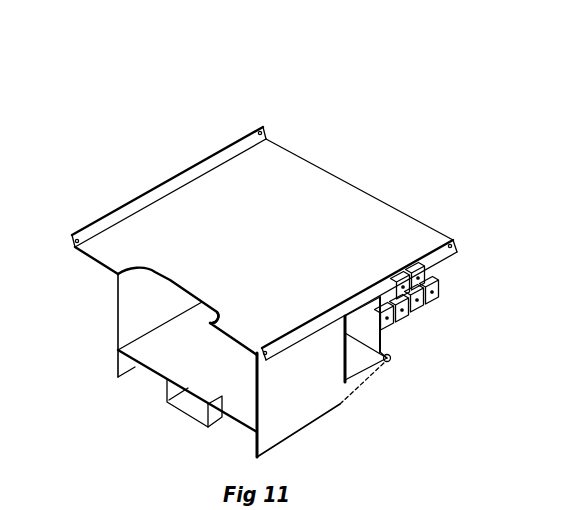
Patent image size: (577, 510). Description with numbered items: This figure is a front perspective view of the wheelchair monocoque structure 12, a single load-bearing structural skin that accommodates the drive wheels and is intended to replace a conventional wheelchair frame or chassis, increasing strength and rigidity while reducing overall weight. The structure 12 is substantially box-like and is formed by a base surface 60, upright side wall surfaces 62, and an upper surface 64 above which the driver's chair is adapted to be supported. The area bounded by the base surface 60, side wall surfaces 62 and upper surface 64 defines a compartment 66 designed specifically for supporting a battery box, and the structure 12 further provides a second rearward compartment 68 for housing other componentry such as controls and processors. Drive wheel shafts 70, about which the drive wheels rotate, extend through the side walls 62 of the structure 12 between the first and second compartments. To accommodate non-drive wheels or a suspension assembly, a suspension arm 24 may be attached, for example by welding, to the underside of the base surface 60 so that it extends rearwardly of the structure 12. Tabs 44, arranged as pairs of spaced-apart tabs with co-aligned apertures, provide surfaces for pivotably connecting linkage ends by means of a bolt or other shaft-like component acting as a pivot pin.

The monocoque structure 12 is at (298, 268).
The suspension arm 24 is at (350, 381).
The tabs 44 is at (453, 283).
The base surface 60 is at (226, 374).
The side wall surfaces 62 is at (130, 315).
The upper surface 64 is at (225, 202).
The compartment 66 is at (248, 371).
The second rearward compartment 68 is at (375, 327).
The drive wheel shafts 70 is at (392, 362).